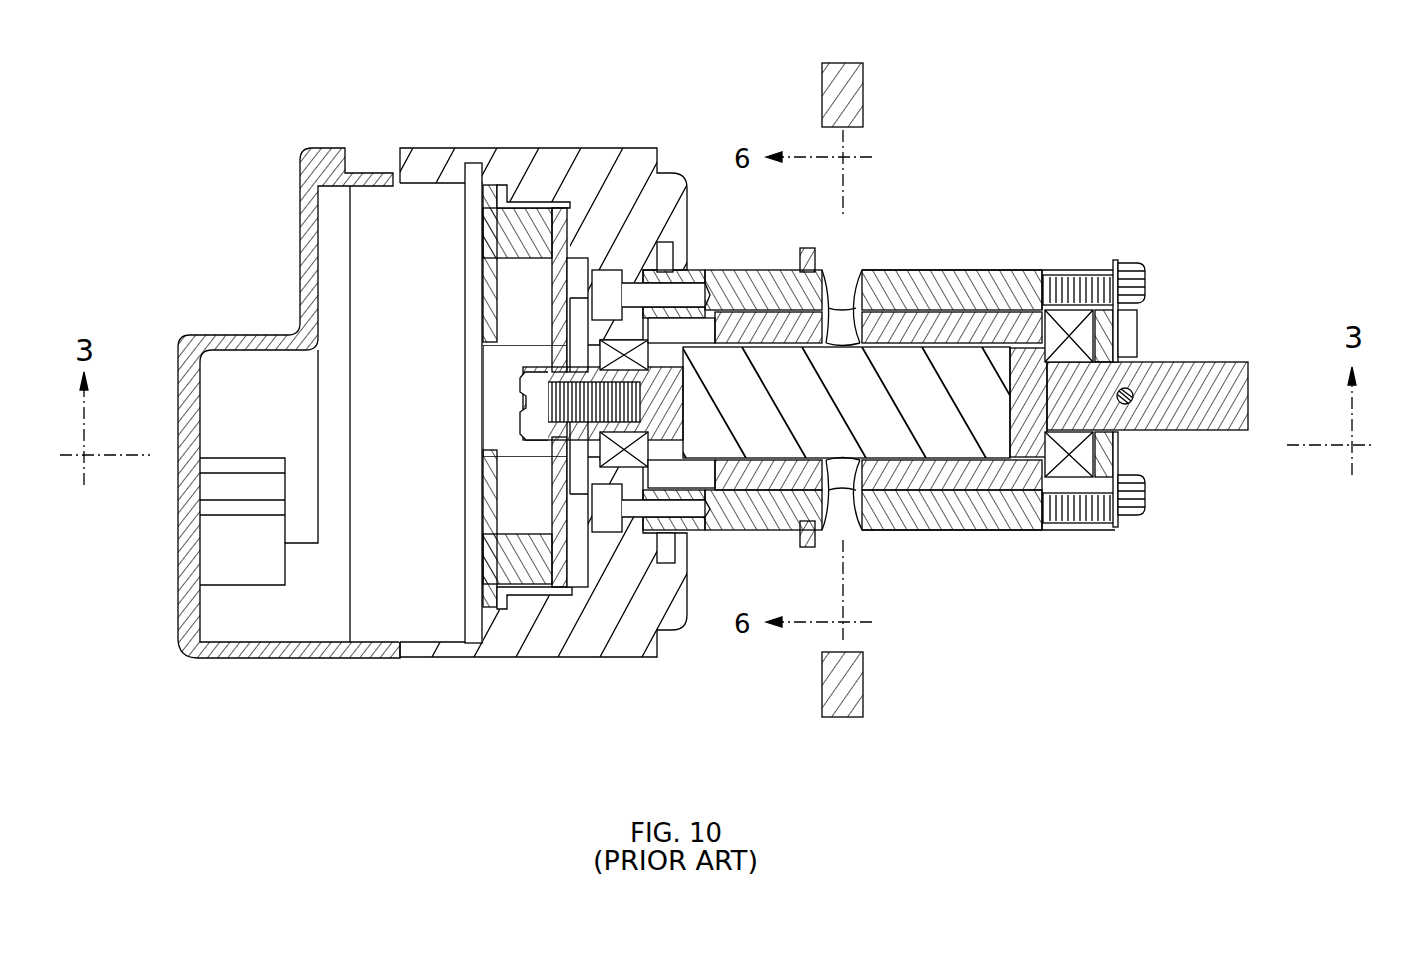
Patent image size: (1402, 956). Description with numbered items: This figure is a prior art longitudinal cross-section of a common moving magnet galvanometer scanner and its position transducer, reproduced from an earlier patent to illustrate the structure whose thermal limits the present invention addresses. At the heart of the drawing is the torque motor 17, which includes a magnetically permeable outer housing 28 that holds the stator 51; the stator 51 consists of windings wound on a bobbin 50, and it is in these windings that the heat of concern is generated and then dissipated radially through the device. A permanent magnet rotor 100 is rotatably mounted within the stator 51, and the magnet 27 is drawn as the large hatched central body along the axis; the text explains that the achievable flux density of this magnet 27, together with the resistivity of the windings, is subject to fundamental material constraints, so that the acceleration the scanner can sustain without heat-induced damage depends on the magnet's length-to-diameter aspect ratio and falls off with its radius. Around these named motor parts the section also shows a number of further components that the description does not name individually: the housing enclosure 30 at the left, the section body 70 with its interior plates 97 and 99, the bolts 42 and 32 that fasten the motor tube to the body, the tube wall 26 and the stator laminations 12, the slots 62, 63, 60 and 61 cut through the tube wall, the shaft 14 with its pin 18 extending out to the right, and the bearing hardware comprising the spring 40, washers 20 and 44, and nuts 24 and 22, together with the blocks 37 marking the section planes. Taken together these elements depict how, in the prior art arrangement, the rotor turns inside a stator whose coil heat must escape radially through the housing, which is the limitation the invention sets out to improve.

The housing 30 is at (487, 133).
The plate 97 is at (556, 206).
The bolt 42 is at (628, 280).
The outer housing 28 is at (732, 268).
The slot edge 63 is at (837, 268).
The slot 62 is at (846, 268).
The tube wall 26 is at (928, 268).
The torque motor 17 is at (1004, 234).
The stator 51 is at (988, 305).
The spring 40 is at (1072, 325).
The nut 24 is at (1140, 281).
The washer 20 is at (1137, 333).
The pin 18 is at (1135, 396).
The shaft 14 is at (1208, 435).
The washer 44 is at (1103, 465).
The nut 22 is at (1140, 488).
The stator 12 is at (698, 338).
The stator magnet 27 is at (943, 397).
The bobbin 50 is at (956, 482).
The permanent magnet rotor 100 is at (891, 470).
The slot 60 is at (857, 480).
The slot edge 61 is at (838, 530).
The bolt 32 is at (800, 541).
The body 70 is at (631, 631).
The screw 99 is at (543, 443).
The block 37 is at (864, 108).